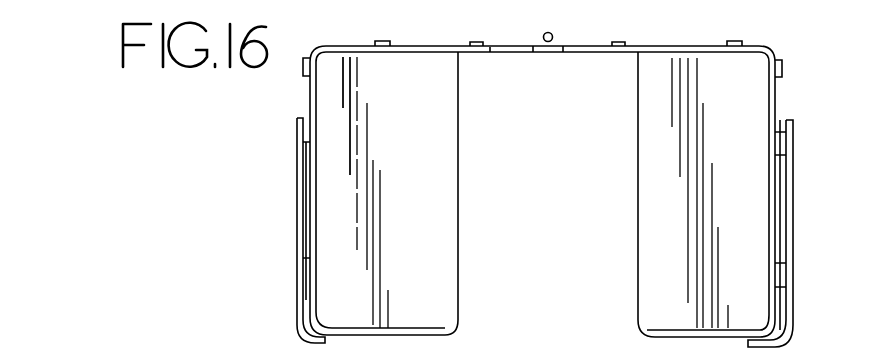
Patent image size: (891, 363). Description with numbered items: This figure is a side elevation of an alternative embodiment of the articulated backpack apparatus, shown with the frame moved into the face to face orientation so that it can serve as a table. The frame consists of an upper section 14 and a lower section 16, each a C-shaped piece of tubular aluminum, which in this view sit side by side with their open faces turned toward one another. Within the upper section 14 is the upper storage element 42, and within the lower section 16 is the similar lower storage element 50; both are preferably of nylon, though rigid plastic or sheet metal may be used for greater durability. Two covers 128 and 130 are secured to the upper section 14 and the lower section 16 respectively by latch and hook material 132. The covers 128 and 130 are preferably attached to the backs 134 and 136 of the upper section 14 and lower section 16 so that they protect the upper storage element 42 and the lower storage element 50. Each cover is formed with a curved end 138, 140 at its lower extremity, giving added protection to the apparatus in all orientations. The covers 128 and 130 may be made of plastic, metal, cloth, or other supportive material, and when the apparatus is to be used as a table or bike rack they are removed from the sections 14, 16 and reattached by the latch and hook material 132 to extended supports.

The upper section 14 is at (438, 335).
The lower section 16 is at (662, 340).
The upper storage element 42 is at (459, 192).
The lower storage element 50 is at (643, 177).
The cover 128 is at (296, 244).
The cover 130 is at (793, 197).
The latch and hook material 132 is at (310, 133).
The back 134 is at (318, 222).
The back 136 is at (768, 252).
The curved end 138 is at (298, 333).
The curved end 140 is at (773, 347).